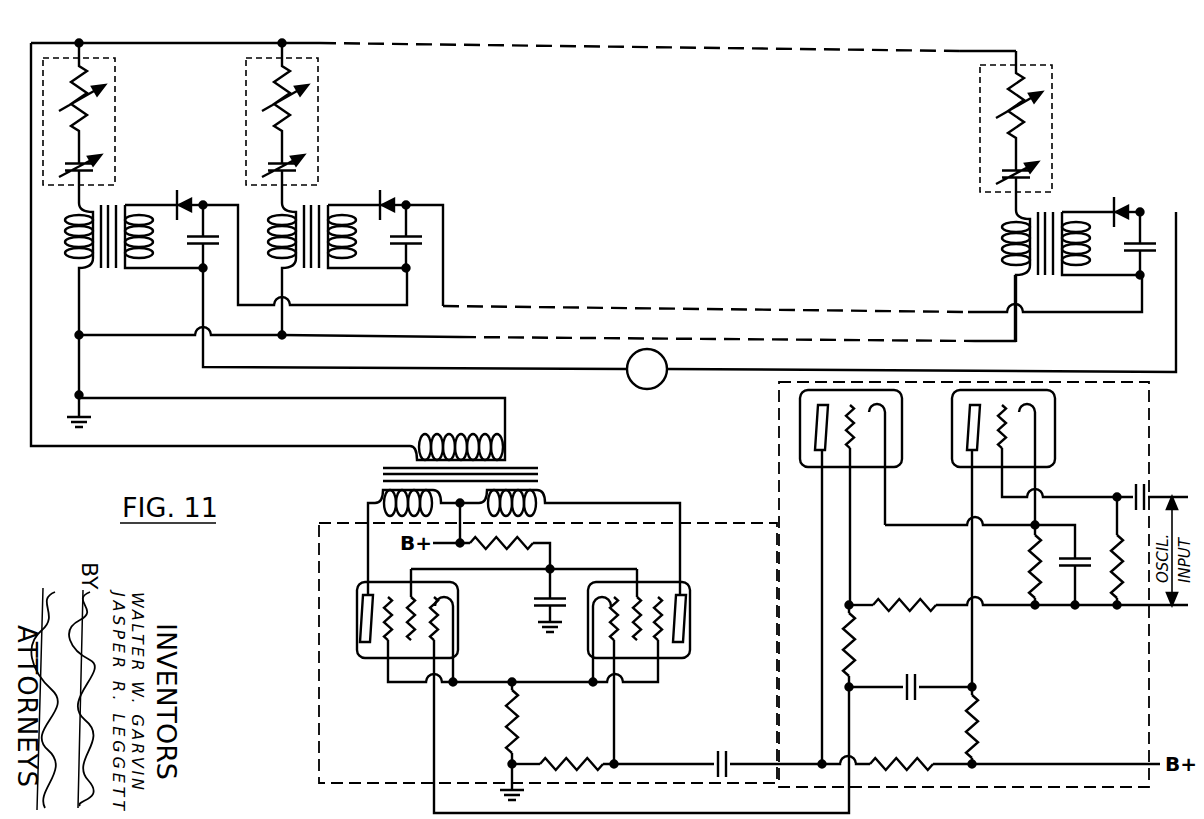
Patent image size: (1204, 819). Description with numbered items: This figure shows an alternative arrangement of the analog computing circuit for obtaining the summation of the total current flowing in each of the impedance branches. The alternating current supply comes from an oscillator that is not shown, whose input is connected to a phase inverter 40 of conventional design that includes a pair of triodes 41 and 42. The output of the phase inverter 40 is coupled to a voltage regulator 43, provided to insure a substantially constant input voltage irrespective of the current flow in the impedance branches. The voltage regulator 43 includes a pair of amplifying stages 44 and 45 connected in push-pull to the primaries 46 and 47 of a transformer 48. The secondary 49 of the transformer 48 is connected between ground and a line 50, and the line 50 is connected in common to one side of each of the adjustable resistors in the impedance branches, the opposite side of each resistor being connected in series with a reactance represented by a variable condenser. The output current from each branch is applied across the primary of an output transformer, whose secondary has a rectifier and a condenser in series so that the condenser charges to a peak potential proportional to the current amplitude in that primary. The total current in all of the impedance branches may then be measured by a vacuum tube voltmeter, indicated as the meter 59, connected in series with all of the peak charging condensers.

The phase inverter 40 is at (1112, 450).
The triode 41 is at (900, 466).
The triode 42 is at (954, 466).
The voltage regulator 43 is at (745, 620).
The amplifying stage 44 is at (458, 640).
The amplifying stage 45 is at (588, 640).
The primary 46 is at (395, 503).
The primary 47 is at (530, 502).
The transformer 48 is at (540, 477).
The secondary 49 is at (500, 452).
The line 50 is at (165, 44).
The meter 59 is at (661, 383).